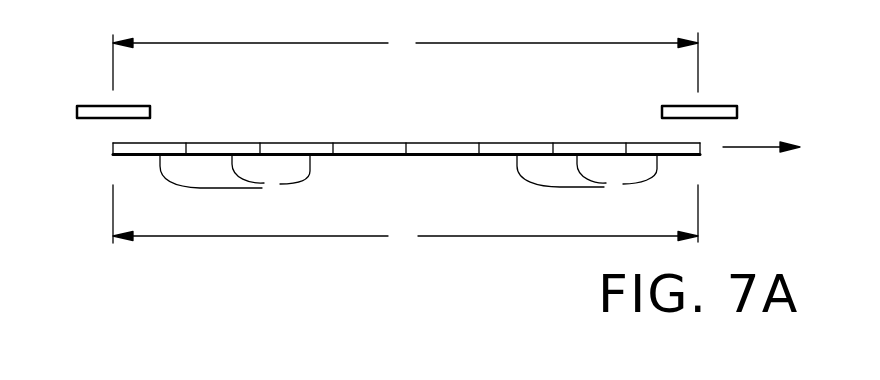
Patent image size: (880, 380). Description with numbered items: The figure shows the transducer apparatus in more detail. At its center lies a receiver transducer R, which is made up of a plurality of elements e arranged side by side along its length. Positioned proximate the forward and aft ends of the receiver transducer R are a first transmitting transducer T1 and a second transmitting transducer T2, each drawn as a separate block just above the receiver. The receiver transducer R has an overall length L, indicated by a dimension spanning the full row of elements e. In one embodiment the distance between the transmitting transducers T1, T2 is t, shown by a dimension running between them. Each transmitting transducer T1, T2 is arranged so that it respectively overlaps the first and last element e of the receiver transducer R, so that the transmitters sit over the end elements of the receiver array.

The first transmitting transducer T1 is at (735, 104).
The second transmitting transducer T2 is at (92, 105).
The receiver transducer R is at (417, 156).
The elements e is at (408, 176).
The distance between the transmitting transducers t is at (405, 60).
The length of the receiver transducer L is at (405, 221).